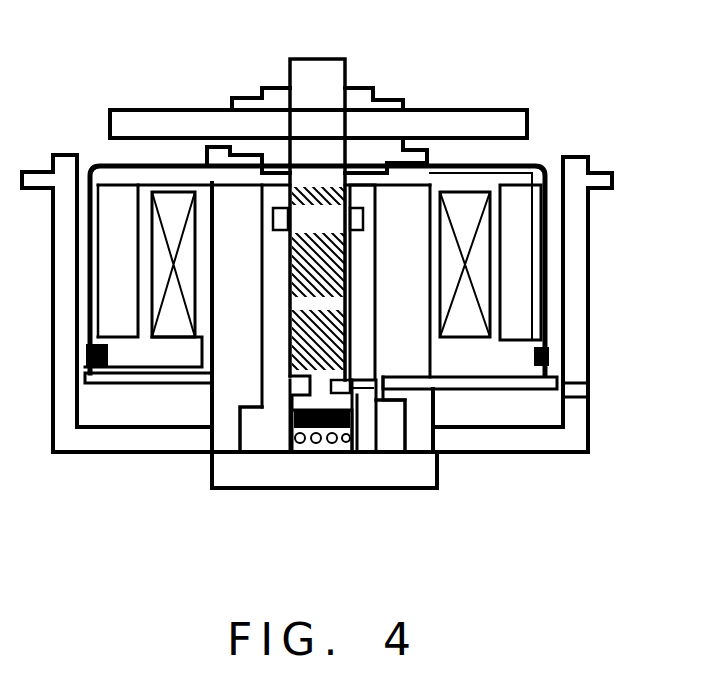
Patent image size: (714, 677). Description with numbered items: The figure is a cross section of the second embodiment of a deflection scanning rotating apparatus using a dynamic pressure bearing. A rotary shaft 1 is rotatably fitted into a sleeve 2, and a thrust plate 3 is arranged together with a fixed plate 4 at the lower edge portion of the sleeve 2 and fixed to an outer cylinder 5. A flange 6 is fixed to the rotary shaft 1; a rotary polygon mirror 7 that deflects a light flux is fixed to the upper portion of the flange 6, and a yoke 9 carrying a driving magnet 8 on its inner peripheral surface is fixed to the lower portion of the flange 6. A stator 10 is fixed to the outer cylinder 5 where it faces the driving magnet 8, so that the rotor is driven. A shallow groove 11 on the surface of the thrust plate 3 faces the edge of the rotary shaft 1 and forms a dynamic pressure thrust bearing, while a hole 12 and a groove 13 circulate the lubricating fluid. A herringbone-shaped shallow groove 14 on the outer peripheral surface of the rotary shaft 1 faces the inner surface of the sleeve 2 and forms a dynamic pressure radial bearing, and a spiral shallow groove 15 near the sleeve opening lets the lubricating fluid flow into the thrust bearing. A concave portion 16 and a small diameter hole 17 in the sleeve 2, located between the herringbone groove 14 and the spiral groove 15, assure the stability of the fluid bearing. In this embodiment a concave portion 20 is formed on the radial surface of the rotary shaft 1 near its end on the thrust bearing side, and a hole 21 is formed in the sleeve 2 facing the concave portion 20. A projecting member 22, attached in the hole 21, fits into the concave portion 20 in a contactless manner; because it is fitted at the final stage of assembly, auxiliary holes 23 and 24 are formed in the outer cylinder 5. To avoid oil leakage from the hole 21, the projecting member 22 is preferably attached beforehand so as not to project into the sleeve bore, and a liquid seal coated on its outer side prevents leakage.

The rotary shaft 1 is at (337, 73).
The sleeve 2 is at (424, 490).
The thrust plate 3 is at (340, 430).
The fixed plate 4 is at (227, 475).
The outer cylinder 5 is at (138, 438).
The flange 6 is at (380, 150).
The rotary polygon mirror 7 is at (462, 118).
The driving magnet 8 is at (546, 170).
The yoke 9 is at (520, 207).
The stator 10 is at (473, 330).
The shallow groove 11 is at (292, 427).
The hole 12 is at (306, 428).
The groove 13 is at (325, 432).
The herringbone-shaped shallow groove 14 is at (292, 253).
The spiral shallow groove 15 is at (310, 185).
The concave portion 16 is at (300, 192).
The small diameter hole 17 is at (276, 207).
The concave portion 20 is at (320, 440).
The hole 21 is at (366, 435).
The projecting member 22 is at (387, 437).
The auxiliary hole 23 is at (423, 390).
The auxiliary hole 24 is at (580, 389).